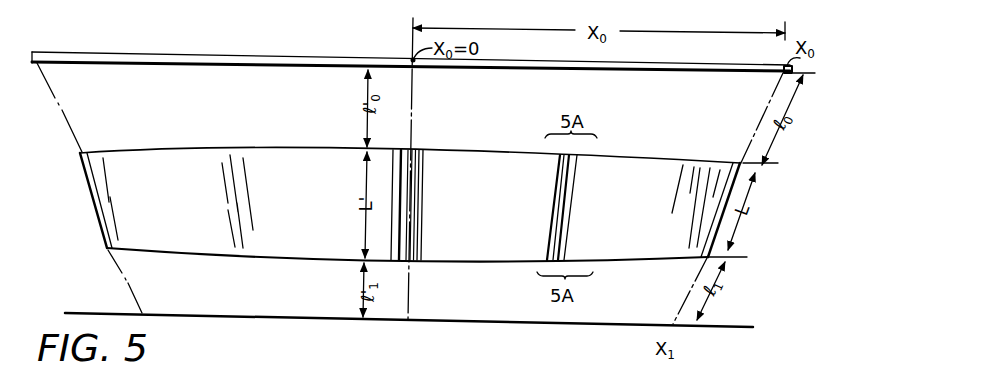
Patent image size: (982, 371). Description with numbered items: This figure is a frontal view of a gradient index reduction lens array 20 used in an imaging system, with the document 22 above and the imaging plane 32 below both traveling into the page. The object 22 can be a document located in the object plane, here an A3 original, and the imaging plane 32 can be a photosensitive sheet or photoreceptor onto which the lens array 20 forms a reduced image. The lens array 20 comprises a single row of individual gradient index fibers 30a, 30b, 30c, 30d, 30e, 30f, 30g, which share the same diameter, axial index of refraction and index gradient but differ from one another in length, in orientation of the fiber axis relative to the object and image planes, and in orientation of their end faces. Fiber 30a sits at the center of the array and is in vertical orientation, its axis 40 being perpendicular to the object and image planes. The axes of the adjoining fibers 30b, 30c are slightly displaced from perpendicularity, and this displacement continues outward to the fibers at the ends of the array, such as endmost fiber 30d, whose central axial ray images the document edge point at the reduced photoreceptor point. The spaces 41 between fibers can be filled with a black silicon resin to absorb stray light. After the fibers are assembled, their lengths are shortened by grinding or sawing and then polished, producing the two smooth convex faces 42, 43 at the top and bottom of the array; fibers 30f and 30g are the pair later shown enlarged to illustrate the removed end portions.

The reduction lens array 20 is at (244, 118).
The object 22 is at (220, 57).
The gradient index fiber 30a is at (424, 172).
The gradient index fiber 30b is at (408, 197).
The gradient index fiber 30c is at (400, 231).
The endmost fiber 30d is at (712, 232).
The gradient index fiber 30e is at (103, 221).
The gradient index fiber 30f is at (573, 199).
The gradient index fiber 30g is at (561, 199).
The imaging plane 32 is at (543, 323).
The axis 40 is at (415, 90).
The spaces 41 is at (394, 156).
The convex face 42 is at (475, 152).
The convex face 43 is at (473, 264).